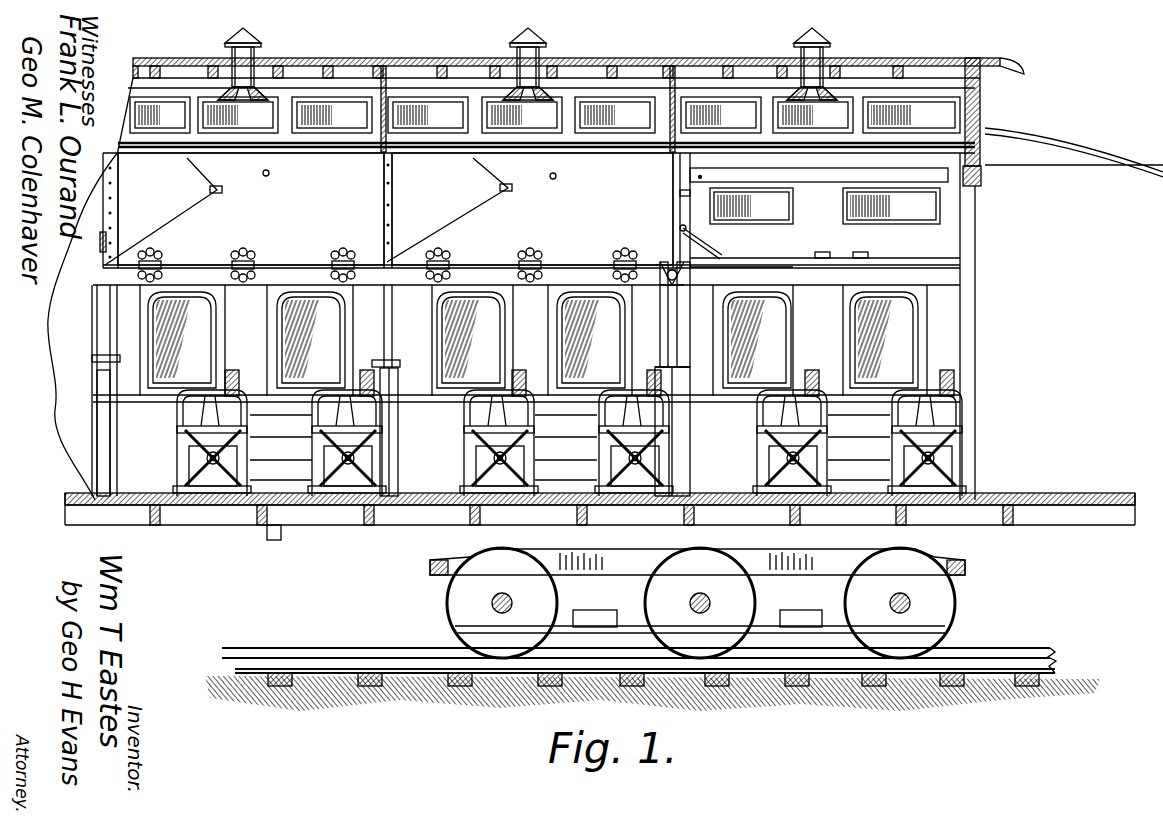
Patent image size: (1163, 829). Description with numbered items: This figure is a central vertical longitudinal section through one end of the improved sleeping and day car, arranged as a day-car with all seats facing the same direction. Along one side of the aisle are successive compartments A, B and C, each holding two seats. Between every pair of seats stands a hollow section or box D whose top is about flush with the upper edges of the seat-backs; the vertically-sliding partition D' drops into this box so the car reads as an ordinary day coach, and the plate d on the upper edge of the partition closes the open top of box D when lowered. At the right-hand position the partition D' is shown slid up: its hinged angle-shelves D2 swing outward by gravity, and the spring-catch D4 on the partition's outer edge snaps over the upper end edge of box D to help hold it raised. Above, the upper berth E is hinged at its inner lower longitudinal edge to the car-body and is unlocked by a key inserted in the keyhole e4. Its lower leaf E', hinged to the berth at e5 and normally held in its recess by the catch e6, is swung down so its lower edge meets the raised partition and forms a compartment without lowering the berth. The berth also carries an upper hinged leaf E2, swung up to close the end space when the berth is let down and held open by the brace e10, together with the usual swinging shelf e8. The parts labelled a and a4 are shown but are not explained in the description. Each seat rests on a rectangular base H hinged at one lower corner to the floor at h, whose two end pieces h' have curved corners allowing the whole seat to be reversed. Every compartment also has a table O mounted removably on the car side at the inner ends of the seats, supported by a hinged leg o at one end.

The lower hinged leaf E' is at (306, 211).
The upper berth E is at (539, 242).
The keyhole e4 is at (270, 175).
The hinge of lower leaf e5 is at (862, 252).
The clerestory sill a is at (346, 150).
The catch e6 is at (508, 192).
The bracket a4 is at (680, 196).
The upper hinged leaf E2 is at (680, 220).
The angle-shelves D2 is at (700, 288).
The brace e10 is at (710, 242).
The swinging shelf e8 is at (819, 194).
The vertically-sliding partition D' is at (379, 336).
The plate d is at (662, 285).
The spring-catch D4 is at (690, 360).
The hollow section or box D is at (407, 431).
The compartment C is at (245, 386).
The compartment B is at (525, 390).
The compartment A is at (814, 390).
The rectangular seat base H is at (756, 428).
The table O is at (570, 446).
The hinged leg o is at (873, 450).
The end pieces h' is at (581, 498).
The floor hinge h is at (600, 501).